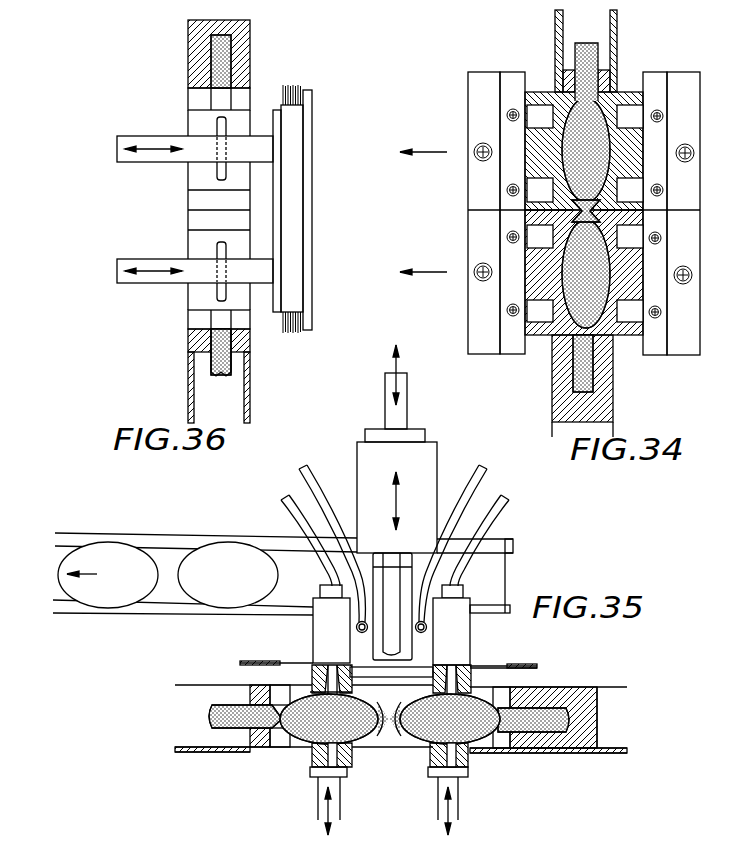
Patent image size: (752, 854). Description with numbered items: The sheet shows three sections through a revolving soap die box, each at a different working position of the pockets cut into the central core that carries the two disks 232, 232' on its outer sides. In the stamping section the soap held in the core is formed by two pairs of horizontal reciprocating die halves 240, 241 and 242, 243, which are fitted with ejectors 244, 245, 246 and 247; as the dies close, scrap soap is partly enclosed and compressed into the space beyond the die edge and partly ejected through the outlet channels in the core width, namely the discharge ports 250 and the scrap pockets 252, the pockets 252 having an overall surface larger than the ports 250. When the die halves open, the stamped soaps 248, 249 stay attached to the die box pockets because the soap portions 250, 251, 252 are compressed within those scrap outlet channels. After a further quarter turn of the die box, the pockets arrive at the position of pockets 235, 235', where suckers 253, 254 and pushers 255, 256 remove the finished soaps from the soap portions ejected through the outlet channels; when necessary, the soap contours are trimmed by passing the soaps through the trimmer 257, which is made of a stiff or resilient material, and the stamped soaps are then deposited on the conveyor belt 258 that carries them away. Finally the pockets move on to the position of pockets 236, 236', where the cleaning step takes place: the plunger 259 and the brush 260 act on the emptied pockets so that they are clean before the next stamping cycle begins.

In FIG. 34, the disk 232 is at (538, 51).
In FIG. 35, the disk 232 is at (369, 725).
In FIG. 34, the disk 232' is at (641, 51).
In FIG. 35, the pocket 235 is at (261, 730).
In FIG. 35, the pocket 235' is at (545, 733).
In FIG. 36, the pocket 236 is at (196, 363).
In FIG. 36, the pocket 236' is at (191, 66).
In FIG. 34, the die half 240 is at (541, 335).
In FIG. 34, the die half 241 is at (630, 335).
In FIG. 34, the die half 242 is at (543, 92).
In FIG. 34, the die half 243 is at (625, 92).
In FIG. 34, the ejector 244 is at (528, 278).
In FIG. 34, the ejector 245 is at (640, 278).
In FIG. 34, the ejector 246 is at (530, 148).
In FIG. 34, the ejector 247 is at (640, 148).
In FIG. 34, the stamped soap 248 is at (598, 308).
In FIG. 35, the stamped soap 248 is at (432, 746).
In FIG. 34, the stamped soap 249 is at (594, 135).
In FIG. 35, the stamped soap 249 is at (309, 727).
In FIG. 34, the discharge port 250 is at (583, 372).
In FIG. 34, the soap portion 251 is at (600, 218).
In FIG. 34, the pocket 252 is at (584, 49).
In FIG. 35, the sucker 253 is at (212, 686).
In FIG. 35, the sucker 254 is at (310, 692).
In FIG. 35, the pusher 255 is at (346, 742).
In FIG. 35, the pusher 256 is at (467, 745).
In FIG. 35, the trimmer 257 is at (507, 665).
In FIG. 35, the conveyor belt 258 is at (175, 590).
In FIG. 36, the plunger 259 is at (310, 330).
In FIG. 36, the brush 260 is at (291, 86).